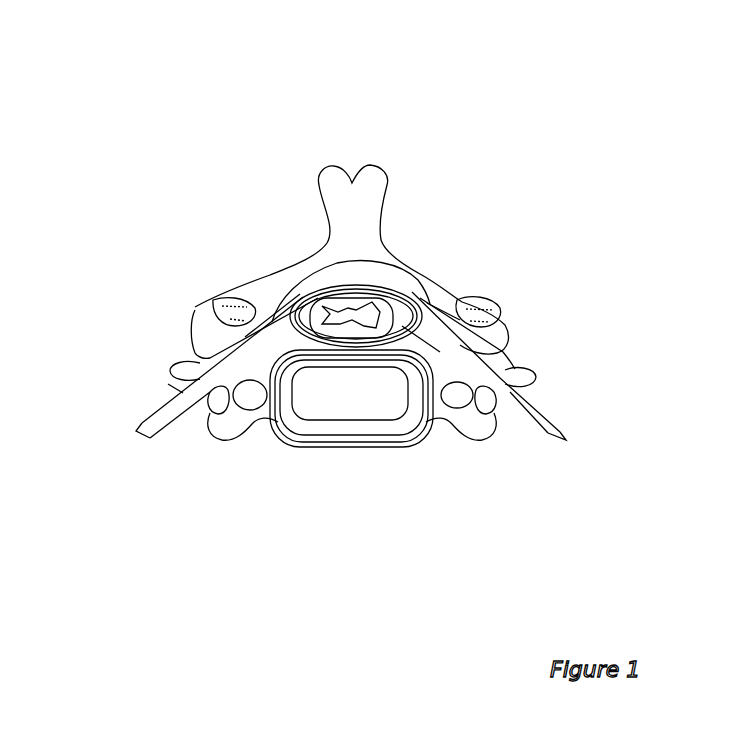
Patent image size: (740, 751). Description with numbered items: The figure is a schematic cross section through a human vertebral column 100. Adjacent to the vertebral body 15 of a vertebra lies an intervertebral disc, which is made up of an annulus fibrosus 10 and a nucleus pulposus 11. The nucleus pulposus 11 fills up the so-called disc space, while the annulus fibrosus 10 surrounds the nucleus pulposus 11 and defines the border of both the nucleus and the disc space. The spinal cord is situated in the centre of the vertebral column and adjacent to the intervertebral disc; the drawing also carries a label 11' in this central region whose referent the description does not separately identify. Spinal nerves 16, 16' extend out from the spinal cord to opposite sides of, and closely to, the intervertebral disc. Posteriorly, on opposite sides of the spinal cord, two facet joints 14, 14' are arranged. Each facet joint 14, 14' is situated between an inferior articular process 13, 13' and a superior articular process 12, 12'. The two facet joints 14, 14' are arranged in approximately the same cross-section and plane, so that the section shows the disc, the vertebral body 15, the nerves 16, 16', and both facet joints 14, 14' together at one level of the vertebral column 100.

The vertebral column 100 is at (144, 77).
The annulus fibrosus 10 is at (347, 425).
The nucleus pulposus 11 is at (309, 449).
The spinal cord / spinal canal 11' is at (379, 261).
The superior articular process 12 is at (158, 375).
The superior articular process 12' is at (551, 382).
The inferior articular process 13 is at (190, 259).
The inferior articular process 13' is at (512, 254).
The facet joint 14 is at (190, 324).
The facet joint 14' is at (525, 326).
The vertebral body 15 is at (428, 420).
The spinal nerve 16 is at (170, 367).
The spinal nerve 16' is at (534, 366).